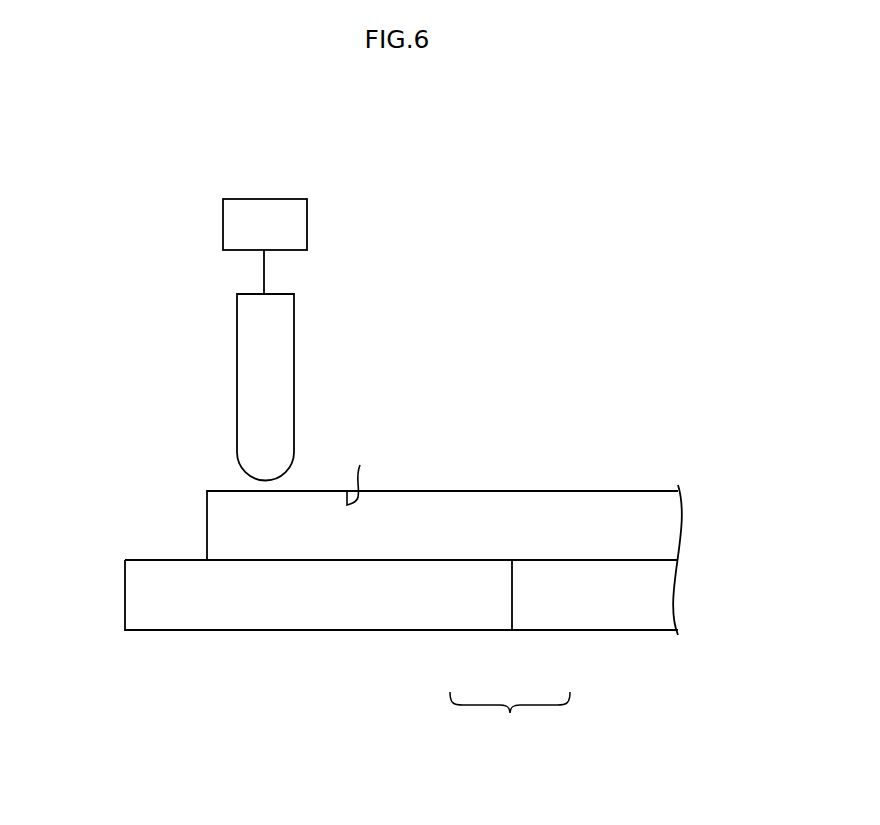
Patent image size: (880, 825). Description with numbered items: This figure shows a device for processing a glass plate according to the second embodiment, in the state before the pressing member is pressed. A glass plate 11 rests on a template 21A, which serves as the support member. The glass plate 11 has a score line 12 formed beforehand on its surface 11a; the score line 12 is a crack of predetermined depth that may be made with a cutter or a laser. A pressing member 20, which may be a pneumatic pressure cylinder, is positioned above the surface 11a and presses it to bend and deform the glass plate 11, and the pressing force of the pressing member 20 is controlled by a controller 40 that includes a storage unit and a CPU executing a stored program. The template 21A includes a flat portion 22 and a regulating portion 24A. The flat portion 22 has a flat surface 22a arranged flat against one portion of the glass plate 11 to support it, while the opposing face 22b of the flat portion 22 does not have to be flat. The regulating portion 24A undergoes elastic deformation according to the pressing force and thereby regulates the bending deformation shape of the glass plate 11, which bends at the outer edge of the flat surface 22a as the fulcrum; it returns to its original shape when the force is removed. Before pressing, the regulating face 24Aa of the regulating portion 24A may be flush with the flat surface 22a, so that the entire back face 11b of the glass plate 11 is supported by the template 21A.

The controller 40 is at (263, 205).
The pressing member 20 is at (287, 362).
The glass plate 11 is at (511, 497).
The score line 12 is at (364, 469).
The surface 11a is at (657, 492).
The back face 11b is at (667, 559).
The flat surface 22a is at (657, 561).
The face 22b is at (667, 630).
The regulating face 24Aa is at (155, 560).
The regulating portion 24A is at (476, 630).
The flat portion 22 is at (548, 630).
The template 21A is at (486, 749).